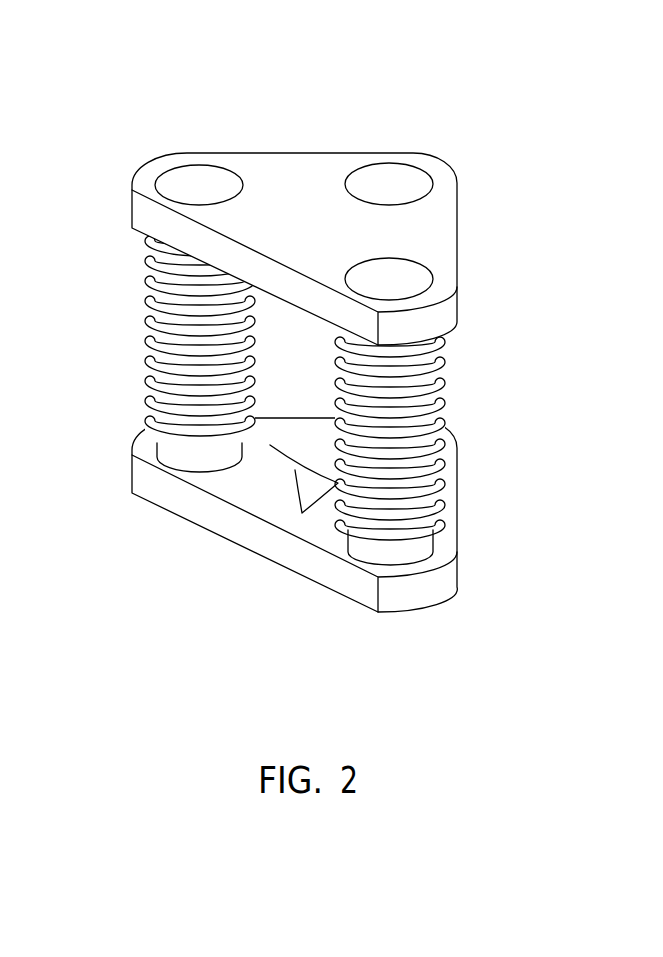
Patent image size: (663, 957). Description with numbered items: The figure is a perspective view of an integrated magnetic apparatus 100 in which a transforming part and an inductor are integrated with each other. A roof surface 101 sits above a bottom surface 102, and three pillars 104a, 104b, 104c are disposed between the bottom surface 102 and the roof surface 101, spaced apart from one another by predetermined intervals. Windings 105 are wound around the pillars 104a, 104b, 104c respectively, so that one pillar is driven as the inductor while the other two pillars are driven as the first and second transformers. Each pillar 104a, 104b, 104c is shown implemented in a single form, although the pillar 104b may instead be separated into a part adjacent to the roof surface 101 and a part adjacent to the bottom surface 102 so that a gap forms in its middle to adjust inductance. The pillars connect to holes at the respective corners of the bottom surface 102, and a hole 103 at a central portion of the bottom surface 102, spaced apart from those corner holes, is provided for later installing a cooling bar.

The integrated magnetic apparatus 100 is at (391, 72).
The roof surface 101 is at (449, 232).
The bottom surface 102 is at (292, 553).
The hole 103 is at (312, 480).
The pillar 104a is at (154, 276).
The pillar 104b is at (423, 545).
The pillar 104c is at (403, 180).
The windings 105 is at (147, 341).